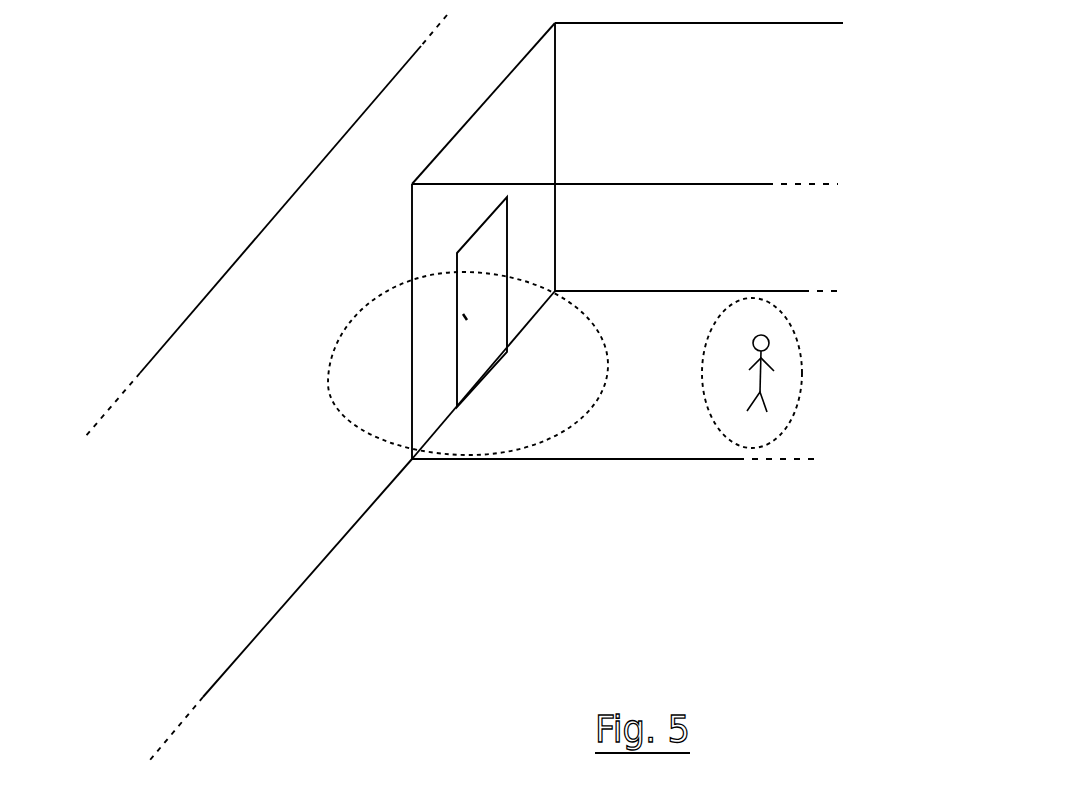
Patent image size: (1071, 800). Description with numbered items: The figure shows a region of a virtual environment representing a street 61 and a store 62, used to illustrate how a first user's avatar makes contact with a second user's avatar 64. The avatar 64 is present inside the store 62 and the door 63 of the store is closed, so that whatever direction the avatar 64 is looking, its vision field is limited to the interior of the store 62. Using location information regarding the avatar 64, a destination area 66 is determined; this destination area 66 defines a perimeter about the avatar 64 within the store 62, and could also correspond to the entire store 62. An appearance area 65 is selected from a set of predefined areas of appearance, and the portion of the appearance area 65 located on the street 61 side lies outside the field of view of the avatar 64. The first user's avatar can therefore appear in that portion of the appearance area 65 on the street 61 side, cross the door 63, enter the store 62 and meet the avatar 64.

The street 61 is at (285, 562).
The store 62 is at (695, 450).
The door 63 is at (483, 242).
The avatar 64 is at (750, 368).
The appearance area 65 is at (360, 400).
The destination area 66 is at (717, 383).